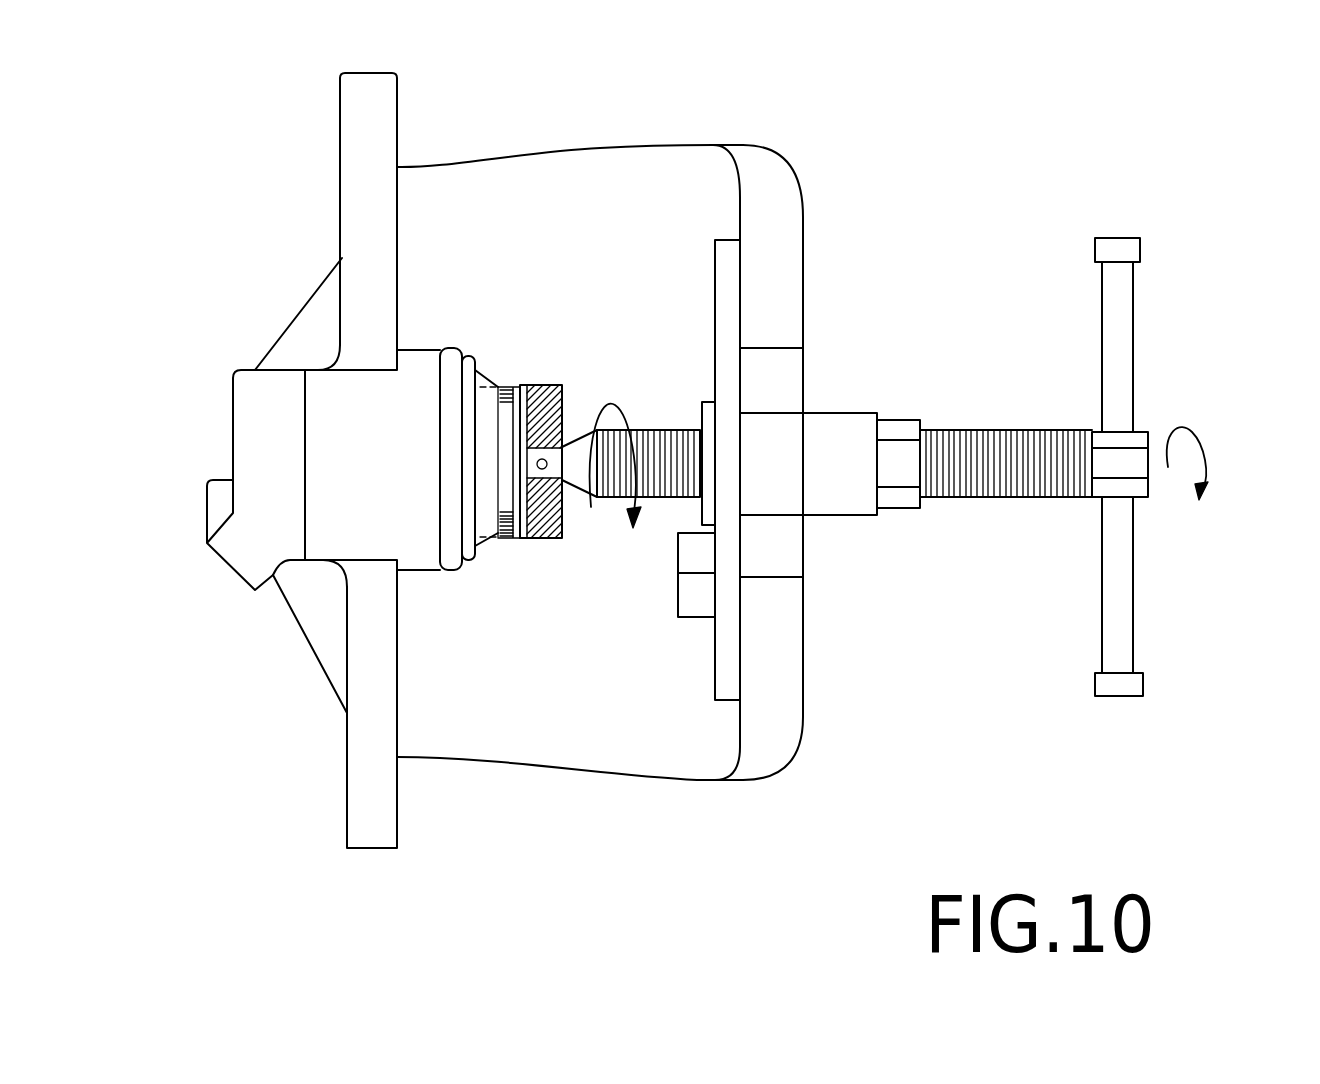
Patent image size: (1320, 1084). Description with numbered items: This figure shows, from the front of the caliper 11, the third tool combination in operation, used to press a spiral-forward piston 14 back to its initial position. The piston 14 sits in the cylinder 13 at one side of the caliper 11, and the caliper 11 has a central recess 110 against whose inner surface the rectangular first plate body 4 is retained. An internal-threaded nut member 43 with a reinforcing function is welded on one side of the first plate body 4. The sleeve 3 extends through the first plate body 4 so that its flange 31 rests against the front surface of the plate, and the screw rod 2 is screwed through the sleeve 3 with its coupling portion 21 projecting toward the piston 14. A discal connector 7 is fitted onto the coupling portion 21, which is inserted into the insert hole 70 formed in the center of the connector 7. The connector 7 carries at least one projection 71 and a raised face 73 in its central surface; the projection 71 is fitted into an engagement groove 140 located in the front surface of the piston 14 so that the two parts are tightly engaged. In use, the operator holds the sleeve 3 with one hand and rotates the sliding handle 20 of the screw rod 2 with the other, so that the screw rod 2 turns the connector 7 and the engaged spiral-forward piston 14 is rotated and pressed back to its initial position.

The screw rod 2 is at (957, 430).
The sleeve 3 is at (825, 432).
The first plate body 4 is at (727, 272).
The connector 7 is at (557, 385).
The caliper 11 is at (782, 192).
The cylinder 13 is at (330, 390).
The piston 14 is at (511, 385).
The sliding handle 20 is at (1120, 347).
The coupling portion 21 is at (577, 400).
The flange 31 is at (710, 518).
The internal-threaded nut member 43 is at (705, 605).
The insert hole 70 is at (552, 540).
The projection 71 is at (537, 385).
The raised face 73 is at (525, 540).
The central recess 110 is at (770, 357).
The engagement groove 140 is at (525, 422).